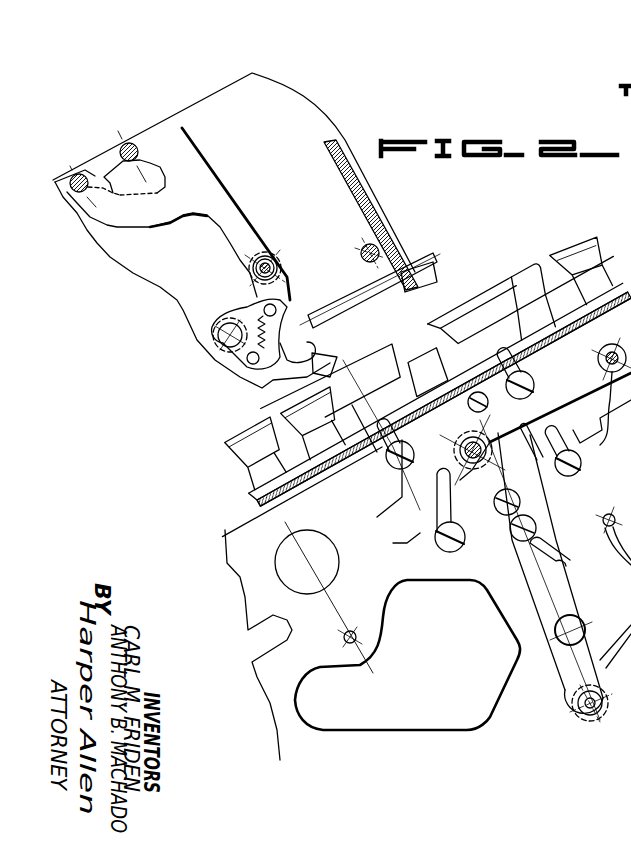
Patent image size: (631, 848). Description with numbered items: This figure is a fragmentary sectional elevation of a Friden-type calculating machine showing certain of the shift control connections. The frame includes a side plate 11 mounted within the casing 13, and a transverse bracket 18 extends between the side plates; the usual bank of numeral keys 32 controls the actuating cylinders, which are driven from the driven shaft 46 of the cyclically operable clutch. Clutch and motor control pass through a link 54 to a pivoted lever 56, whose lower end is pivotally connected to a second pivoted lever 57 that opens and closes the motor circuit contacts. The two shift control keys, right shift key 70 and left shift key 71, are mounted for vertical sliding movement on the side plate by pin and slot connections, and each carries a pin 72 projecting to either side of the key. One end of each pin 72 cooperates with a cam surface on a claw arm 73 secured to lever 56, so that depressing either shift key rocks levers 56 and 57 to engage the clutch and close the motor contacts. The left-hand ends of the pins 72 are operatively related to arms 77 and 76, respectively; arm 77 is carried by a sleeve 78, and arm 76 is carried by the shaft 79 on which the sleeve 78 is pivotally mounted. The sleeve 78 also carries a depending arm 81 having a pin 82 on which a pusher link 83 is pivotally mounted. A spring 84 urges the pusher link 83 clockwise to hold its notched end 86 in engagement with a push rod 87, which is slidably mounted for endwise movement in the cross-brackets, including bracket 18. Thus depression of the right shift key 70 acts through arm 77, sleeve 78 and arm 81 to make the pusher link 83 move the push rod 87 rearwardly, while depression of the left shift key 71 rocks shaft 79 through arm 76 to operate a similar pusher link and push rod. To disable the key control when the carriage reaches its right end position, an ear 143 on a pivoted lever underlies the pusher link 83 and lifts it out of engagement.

The side plate 11 is at (279, 110).
The casing 13 is at (258, 503).
The transverse bracket 18 is at (382, 218).
The numeral keys 32 is at (592, 243).
The driven shaft 46 is at (360, 253).
The link 54 is at (590, 372).
The pivoted lever 56 is at (514, 550).
The second pivoted lever 57 is at (552, 621).
The right shift key 70 is at (395, 488).
The left shift key 71 is at (506, 295).
The pin 72 is at (474, 384).
The claw arm 73 is at (468, 522).
The arm 76 is at (226, 195).
The arm 77 is at (126, 220).
The sleeve 78 is at (270, 255).
The shaft 79 is at (252, 268).
The depending arm 81 is at (289, 289).
The pin 82 is at (215, 340).
The pusher link 83 is at (250, 313).
The spring 84 is at (228, 360).
The notched end 86 is at (321, 306).
The push rod 87 is at (418, 258).
The ear 143 is at (325, 355).